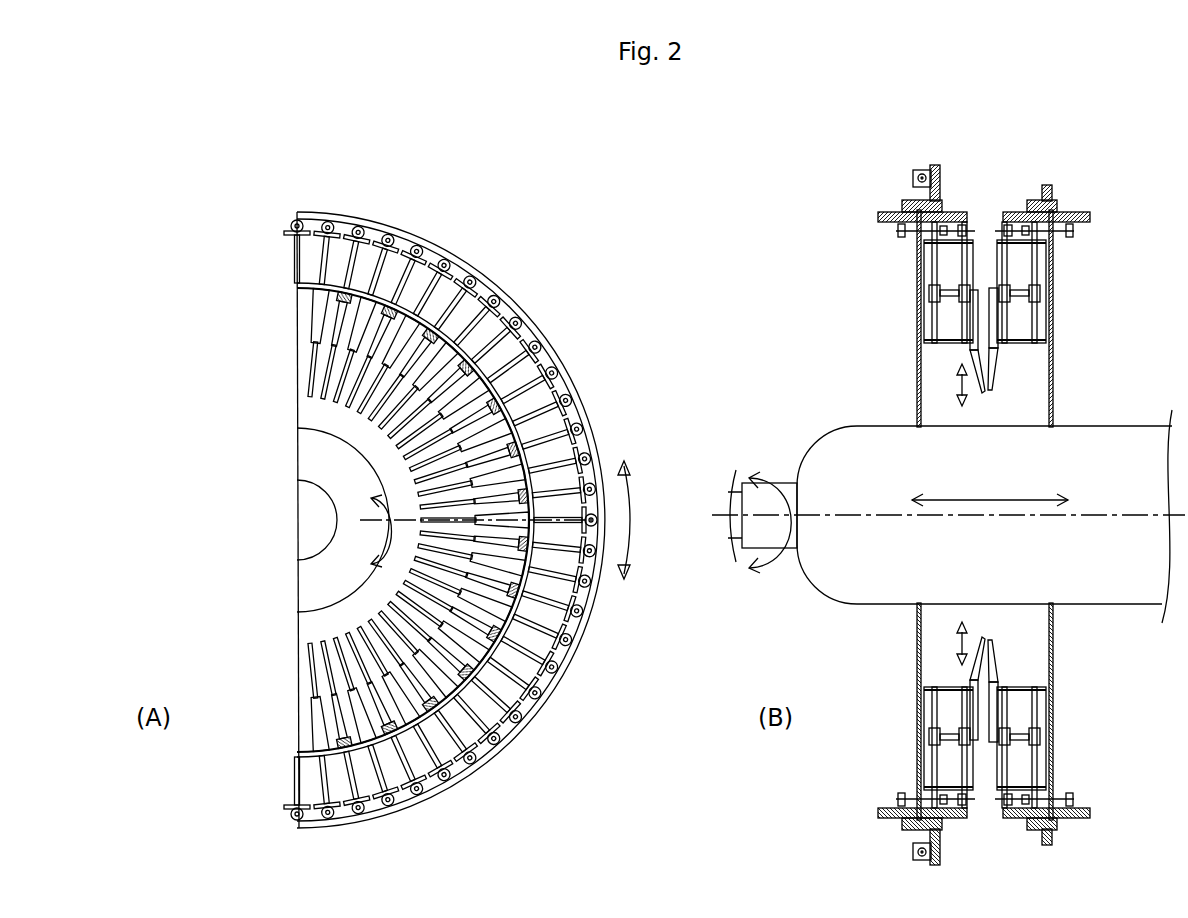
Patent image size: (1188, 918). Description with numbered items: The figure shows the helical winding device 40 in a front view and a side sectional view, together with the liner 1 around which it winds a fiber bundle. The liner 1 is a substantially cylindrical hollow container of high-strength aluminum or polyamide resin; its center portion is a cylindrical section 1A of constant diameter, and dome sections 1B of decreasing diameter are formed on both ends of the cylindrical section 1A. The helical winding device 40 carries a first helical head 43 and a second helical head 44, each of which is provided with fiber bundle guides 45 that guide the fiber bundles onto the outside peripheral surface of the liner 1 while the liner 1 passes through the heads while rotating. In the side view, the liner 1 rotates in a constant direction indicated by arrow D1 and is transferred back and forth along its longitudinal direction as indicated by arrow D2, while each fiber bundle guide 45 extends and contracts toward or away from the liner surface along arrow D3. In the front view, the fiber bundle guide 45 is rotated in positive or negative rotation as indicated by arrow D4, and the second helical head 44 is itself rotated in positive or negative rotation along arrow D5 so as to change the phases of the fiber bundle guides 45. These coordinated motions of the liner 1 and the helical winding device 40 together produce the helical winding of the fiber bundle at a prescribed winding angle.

In FIG. 2A, the liner 1 is at (282, 449).
In FIG. 2B, the liner 1 is at (1086, 400).
In FIG. 2B, the cylindrical section 1A is at (1128, 425).
In FIG. 2B, the dome section 1B is at (822, 442).
In FIG. 2B, the helical winding device 40 is at (985, 176).
In FIG. 2A, the first helical head 43 is at (417, 504).
In FIG. 2B, the first helical head 43 is at (1090, 293).
In FIG. 2A, the second helical head 44 is at (482, 243).
In FIG. 2B, the second helical head 44 is at (875, 295).
In FIG. 2A, the fiber bundle guide 45 is at (298, 390).
In FIG. 2B, the fiber bundle guide 45 is at (985, 392).
In FIG. 2B, the rotation direction of the liner D1 is at (767, 507).
In FIG. 2B, the transfer direction of the liner D2 is at (990, 490).
In FIG. 2B, the extension/contraction direction of the fiber bundle guide D3 is at (946, 514).
In FIG. 2A, the rotation direction of the fiber bundle guide D4 is at (365, 522).
In FIG. 2A, the rotation direction of the second helical head D5 is at (641, 520).